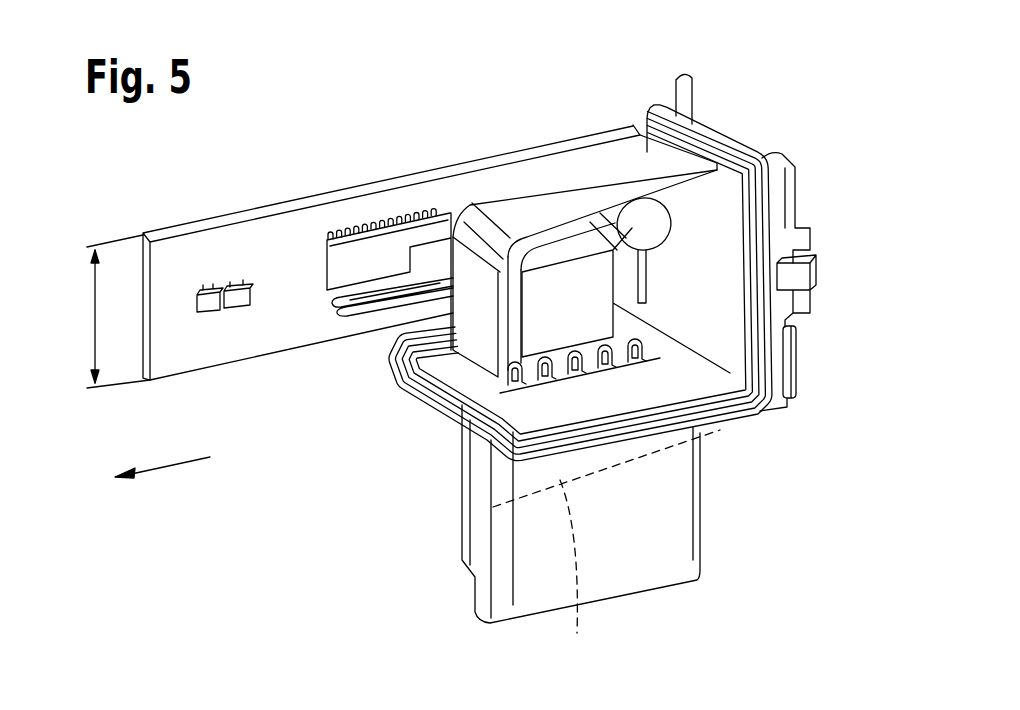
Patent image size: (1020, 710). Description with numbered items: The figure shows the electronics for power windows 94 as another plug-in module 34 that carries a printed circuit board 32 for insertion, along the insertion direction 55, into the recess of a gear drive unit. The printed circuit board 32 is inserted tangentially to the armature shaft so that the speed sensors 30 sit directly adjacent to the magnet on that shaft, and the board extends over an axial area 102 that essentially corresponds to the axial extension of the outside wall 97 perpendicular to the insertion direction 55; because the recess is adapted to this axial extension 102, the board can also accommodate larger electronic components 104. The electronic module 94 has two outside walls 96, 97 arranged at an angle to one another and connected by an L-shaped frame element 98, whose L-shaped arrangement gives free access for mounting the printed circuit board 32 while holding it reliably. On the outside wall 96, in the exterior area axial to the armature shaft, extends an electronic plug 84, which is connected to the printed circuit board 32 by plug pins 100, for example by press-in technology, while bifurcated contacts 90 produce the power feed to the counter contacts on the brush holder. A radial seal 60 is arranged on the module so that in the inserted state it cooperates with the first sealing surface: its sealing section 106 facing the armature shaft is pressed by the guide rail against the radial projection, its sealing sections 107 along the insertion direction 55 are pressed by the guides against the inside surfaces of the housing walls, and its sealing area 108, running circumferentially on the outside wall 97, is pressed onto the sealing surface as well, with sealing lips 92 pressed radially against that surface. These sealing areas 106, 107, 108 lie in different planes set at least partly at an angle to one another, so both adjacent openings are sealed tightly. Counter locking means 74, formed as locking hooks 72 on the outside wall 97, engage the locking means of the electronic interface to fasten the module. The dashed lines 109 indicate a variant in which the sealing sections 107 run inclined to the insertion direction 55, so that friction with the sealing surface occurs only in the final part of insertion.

The speed sensors 30 is at (240, 307).
The printed circuit board 32 is at (282, 243).
The plug-in module 34 is at (470, 175).
The electronics for power windows 94 is at (430, 154).
The insertion direction 55 is at (167, 466).
The radial seal 60 is at (578, 322).
The locking hooks 72 is at (806, 275).
The counter locking means 74 is at (840, 307).
The electronic plug 84 is at (648, 552).
The bifurcated contacts 90 is at (353, 310).
The sealing lips 92 is at (692, 100).
The outside wall 96 is at (663, 395).
The outside wall 97 is at (707, 290).
The L-shaped frame element 98 is at (606, 172).
The plug pins 100 is at (650, 372).
The axial area 102 is at (89, 311).
The larger electronic components 104 is at (390, 243).
The sealing section 106 is at (446, 384).
The sealing sections 107 is at (546, 464).
The sealing area 108 is at (722, 123).
The dashed lines 109 is at (606, 552).